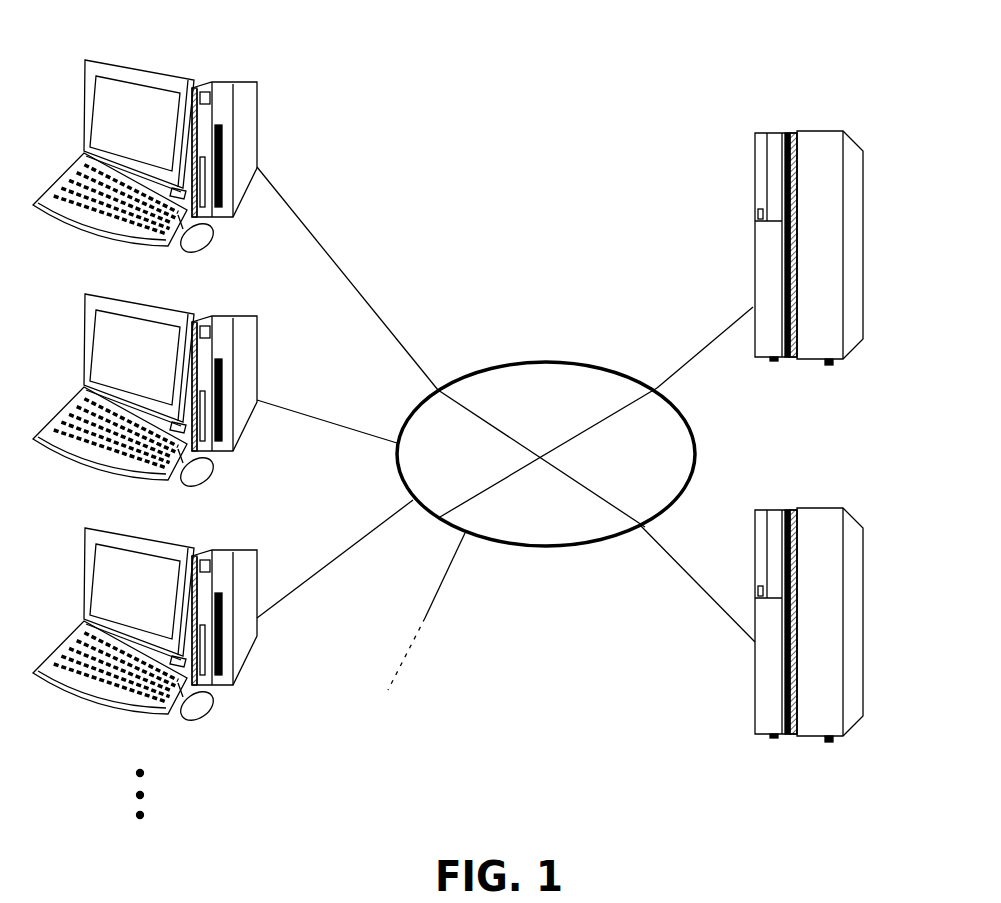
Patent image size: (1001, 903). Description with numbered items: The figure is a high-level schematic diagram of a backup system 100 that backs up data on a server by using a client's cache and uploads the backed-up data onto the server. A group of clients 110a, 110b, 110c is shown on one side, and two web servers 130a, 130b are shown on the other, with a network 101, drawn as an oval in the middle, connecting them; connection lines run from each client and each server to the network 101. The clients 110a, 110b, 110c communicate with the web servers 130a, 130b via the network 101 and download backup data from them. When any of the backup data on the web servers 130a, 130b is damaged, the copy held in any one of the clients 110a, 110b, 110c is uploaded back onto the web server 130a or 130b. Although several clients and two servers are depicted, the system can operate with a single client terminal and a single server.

The backup system 100 is at (540, 117).
The network 101 is at (533, 360).
The client 110a is at (236, 82).
The client 110b is at (236, 316).
The client 110c is at (236, 549).
The web server 130a is at (863, 232).
The web server 130b is at (863, 608).